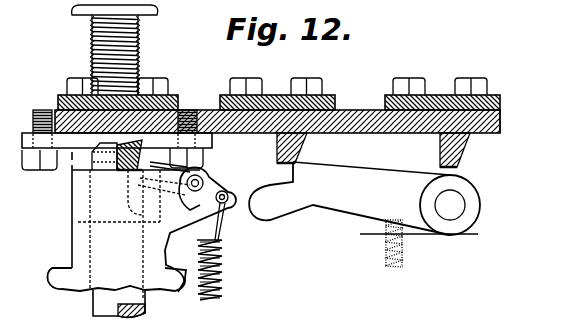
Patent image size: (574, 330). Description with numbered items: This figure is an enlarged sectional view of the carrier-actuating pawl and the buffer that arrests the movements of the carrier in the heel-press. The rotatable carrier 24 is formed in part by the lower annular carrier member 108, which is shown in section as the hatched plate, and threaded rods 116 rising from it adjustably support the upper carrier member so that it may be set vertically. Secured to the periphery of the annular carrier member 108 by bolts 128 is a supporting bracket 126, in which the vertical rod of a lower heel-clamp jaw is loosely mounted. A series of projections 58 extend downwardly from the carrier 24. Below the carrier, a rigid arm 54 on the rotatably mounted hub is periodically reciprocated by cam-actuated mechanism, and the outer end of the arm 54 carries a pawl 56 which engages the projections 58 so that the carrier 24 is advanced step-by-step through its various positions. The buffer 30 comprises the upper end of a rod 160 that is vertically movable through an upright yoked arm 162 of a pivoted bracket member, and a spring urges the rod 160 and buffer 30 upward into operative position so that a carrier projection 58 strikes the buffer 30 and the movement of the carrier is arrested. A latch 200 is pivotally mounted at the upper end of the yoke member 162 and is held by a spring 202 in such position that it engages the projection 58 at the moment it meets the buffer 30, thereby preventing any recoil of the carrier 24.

The rotatable carrier 24 is at (503, 133).
The buffer 30 is at (92, 156).
The rigid arm 54 is at (455, 249).
The pawl 56 is at (382, 175).
The projections 58 is at (300, 150).
The lower annular carrier member 108 is at (500, 120).
The threaded rods 116 is at (140, 43).
The supporting bracket 126 is at (384, 107).
The bolts 128 is at (291, 80).
The rod 160 is at (145, 302).
The upright yoked arm 162 is at (60, 270).
The latch 200 is at (225, 190).
The spring 202 is at (222, 275).